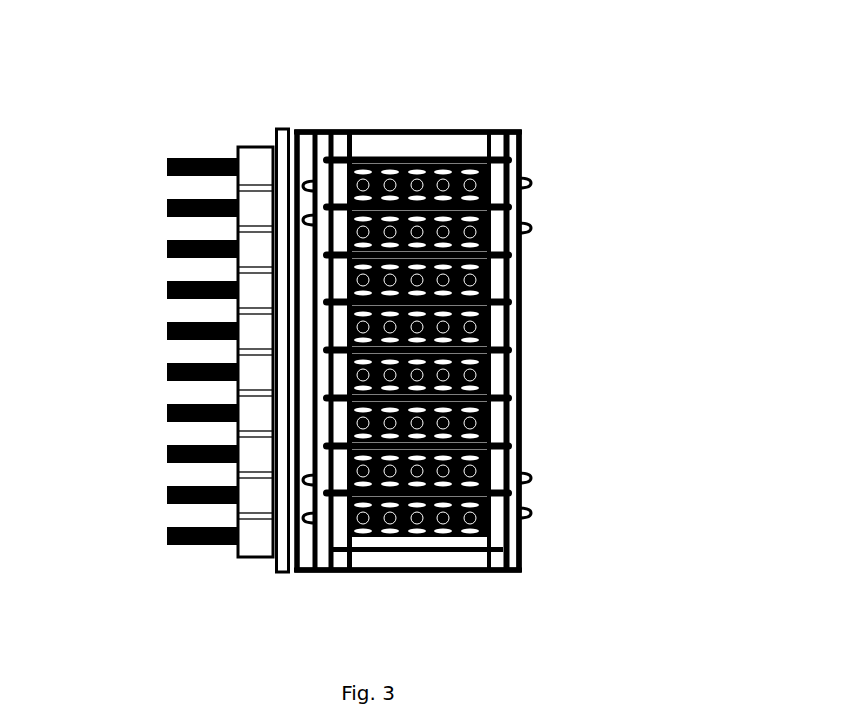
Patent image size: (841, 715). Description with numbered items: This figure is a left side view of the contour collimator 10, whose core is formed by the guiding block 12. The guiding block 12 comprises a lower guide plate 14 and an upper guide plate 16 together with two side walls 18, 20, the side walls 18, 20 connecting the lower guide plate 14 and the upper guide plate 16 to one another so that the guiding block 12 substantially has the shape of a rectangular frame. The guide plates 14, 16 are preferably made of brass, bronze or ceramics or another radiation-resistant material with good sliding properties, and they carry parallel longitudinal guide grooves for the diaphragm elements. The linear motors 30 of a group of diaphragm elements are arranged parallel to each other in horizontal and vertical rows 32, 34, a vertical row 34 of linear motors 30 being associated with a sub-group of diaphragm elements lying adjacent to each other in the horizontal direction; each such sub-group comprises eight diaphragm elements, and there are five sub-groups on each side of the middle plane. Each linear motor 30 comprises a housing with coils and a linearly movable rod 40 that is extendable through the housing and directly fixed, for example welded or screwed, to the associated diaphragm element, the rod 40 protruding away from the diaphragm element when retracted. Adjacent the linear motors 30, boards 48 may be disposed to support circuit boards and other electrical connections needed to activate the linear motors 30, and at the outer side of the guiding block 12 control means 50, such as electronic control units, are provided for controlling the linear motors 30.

The contour collimator 10 is at (617, 132).
The guiding block 12 is at (356, 128).
The lower guide plate 14 is at (416, 558).
The upper guide plate 16 is at (378, 138).
The side wall 18 is at (291, 128).
The side wall 20 is at (520, 325).
The linear motor 30 is at (488, 415).
The horizontal row 32 is at (523, 183).
The vertical row 34 is at (413, 136).
The rod 40 is at (488, 432).
The board 48 is at (513, 398).
The control means 50 is at (166, 160).